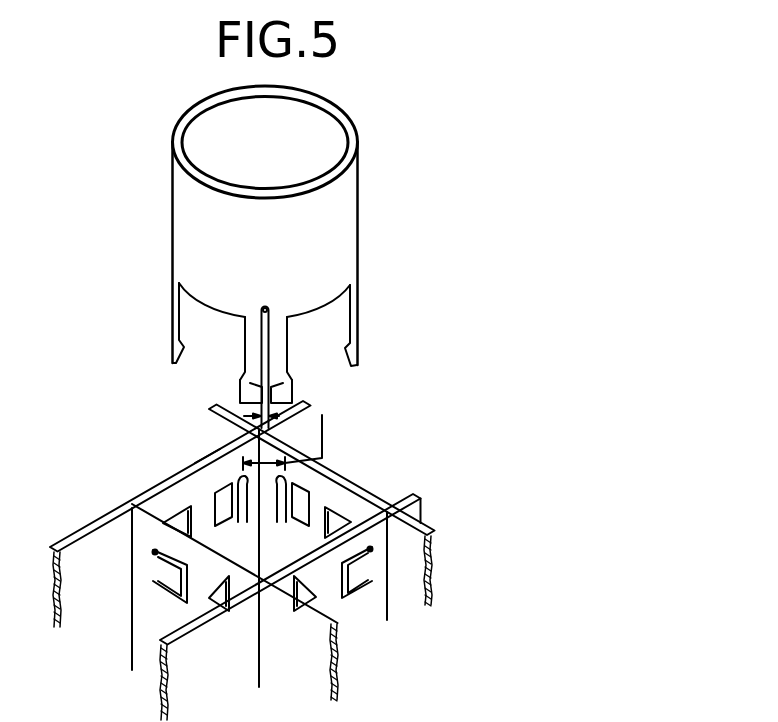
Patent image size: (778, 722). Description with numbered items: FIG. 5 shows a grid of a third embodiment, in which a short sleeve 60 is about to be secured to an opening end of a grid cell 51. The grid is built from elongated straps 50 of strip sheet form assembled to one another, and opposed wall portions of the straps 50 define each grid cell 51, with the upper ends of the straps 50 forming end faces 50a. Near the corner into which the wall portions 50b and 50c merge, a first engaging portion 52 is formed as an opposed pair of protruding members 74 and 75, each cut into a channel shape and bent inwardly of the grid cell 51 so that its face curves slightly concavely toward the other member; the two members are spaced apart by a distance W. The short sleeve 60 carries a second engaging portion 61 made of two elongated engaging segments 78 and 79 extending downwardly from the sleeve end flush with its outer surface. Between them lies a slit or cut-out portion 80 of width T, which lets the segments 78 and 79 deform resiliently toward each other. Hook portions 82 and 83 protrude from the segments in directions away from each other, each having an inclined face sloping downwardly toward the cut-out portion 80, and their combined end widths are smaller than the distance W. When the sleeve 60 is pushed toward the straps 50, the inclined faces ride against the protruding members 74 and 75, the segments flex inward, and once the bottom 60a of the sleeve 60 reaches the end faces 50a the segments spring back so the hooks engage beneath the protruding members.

The elongated strap 50 is at (377, 603).
The end face of the strap 50a is at (378, 540).
The wall portion of the strap 50b is at (183, 500).
The wall portion of the strap 50c is at (330, 478).
The grid cell 51 is at (303, 560).
The first engaging portion 52 is at (192, 470).
The short sleeve 60 is at (334, 225).
The bottom of the short sleeve 60a is at (338, 297).
The second engaging portion 61 is at (300, 372).
The protruding member 74 is at (207, 457).
The protruding member 75 is at (292, 475).
The engaging segment 78 is at (189, 360).
The engaging segment 79 is at (315, 363).
The cut-out portion 80 is at (270, 329).
The hook portion 82 is at (237, 383).
The hook portion 83 is at (280, 391).
The width of the slit T is at (237, 402).
The distance between the protruding members W is at (322, 437).